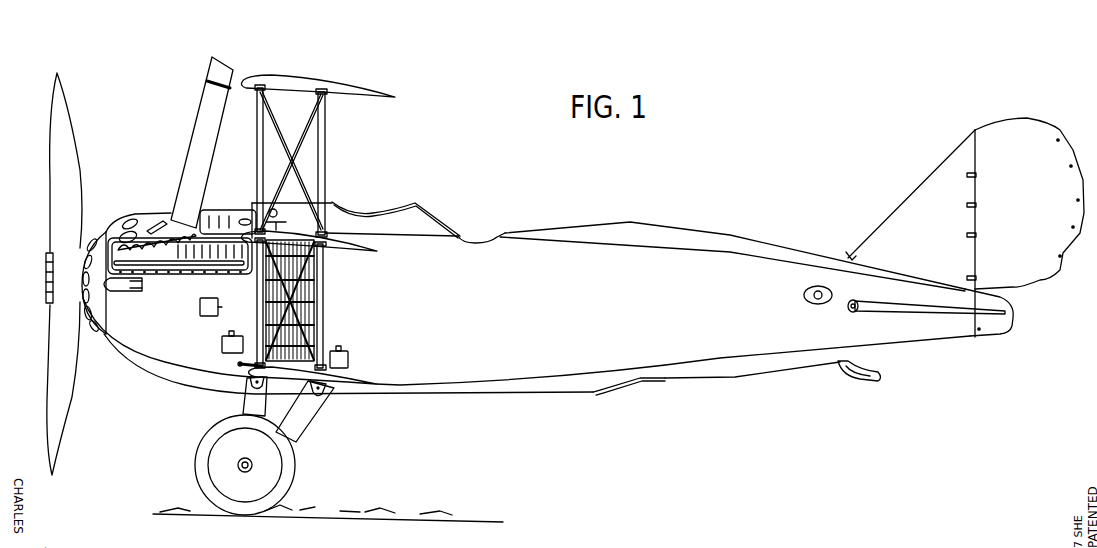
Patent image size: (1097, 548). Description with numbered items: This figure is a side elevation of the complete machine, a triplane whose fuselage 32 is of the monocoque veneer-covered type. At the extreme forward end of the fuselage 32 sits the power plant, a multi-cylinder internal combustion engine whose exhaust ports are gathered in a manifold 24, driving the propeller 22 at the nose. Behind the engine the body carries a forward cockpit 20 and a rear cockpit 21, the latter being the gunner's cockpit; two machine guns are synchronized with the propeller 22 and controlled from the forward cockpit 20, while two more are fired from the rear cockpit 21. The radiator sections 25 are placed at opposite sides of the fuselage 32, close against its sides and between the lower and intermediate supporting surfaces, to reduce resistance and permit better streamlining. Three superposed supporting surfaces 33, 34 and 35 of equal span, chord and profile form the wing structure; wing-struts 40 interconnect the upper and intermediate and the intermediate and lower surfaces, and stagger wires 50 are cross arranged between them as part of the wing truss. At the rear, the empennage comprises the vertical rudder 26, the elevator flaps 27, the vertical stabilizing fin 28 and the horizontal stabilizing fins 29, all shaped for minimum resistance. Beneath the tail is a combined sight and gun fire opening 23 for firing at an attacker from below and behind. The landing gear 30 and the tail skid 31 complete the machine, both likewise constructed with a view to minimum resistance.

The forward cockpit 20 is at (375, 211).
The rear cockpit 21 is at (497, 238).
The propeller 22 is at (72, 143).
The combined sight and gun fire opening 23 is at (648, 380).
The exhaust manifold 24 is at (210, 102).
The radiator sections 25 is at (302, 287).
The vertical rudder 26 is at (1025, 188).
The elevator flaps 27 is at (1010, 311).
The vertical stabilizing fin 28 is at (931, 190).
The horizontal stabilizing fins 29 is at (913, 307).
The landing gear 30 is at (194, 471).
The tail skid 31 is at (860, 383).
The fuselage 32 is at (715, 226).
The upper supporting surface 33 is at (331, 89).
The intermediate supporting surface 34 is at (348, 238).
The lower supporting surface 35 is at (363, 375).
The wing-struts 40 is at (323, 147).
The stagger wires 50 is at (306, 188).